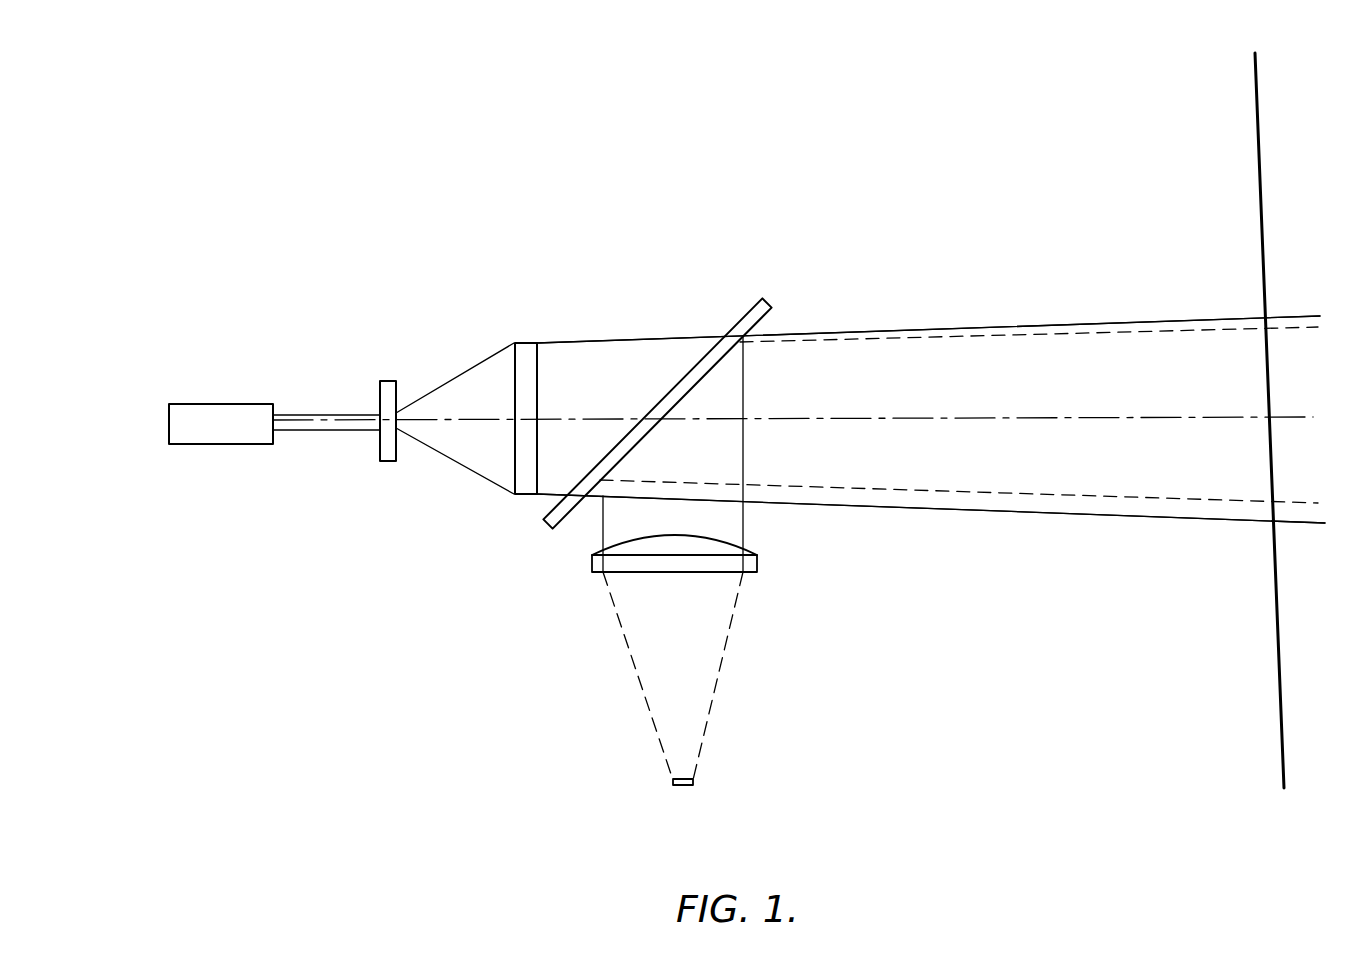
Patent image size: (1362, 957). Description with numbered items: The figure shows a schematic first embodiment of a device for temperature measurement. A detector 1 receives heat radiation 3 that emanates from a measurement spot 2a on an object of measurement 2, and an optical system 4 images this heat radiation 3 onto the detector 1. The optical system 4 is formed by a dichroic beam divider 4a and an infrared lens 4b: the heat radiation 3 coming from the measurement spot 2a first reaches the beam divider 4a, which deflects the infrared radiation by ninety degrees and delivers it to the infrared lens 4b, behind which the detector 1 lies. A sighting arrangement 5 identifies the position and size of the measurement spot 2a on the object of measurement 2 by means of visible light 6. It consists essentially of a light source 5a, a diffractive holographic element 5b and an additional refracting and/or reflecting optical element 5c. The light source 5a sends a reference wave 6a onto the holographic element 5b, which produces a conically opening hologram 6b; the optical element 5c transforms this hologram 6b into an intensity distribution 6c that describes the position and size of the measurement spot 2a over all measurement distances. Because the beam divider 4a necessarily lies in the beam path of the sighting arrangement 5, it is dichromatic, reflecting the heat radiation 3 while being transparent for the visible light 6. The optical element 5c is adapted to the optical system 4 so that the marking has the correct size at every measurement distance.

The detector 1 is at (693, 783).
The object of measurement 2 is at (1272, 732).
The measurement spot 2a is at (1266, 360).
The heat radiation 3 is at (1006, 336).
The optical system 4 is at (541, 594).
The dichroic beam divider 4a is at (768, 302).
The infrared lens 4b is at (757, 566).
The sighting arrangement 5 is at (275, 134).
The light source 5a is at (210, 411).
The holographic element 5b is at (385, 381).
The optical element 5c is at (525, 360).
The visible light 6 is at (1163, 318).
The reference wave 6a is at (318, 432).
The conically opening hologram 6b is at (442, 455).
The intensity distribution 6c is at (930, 329).